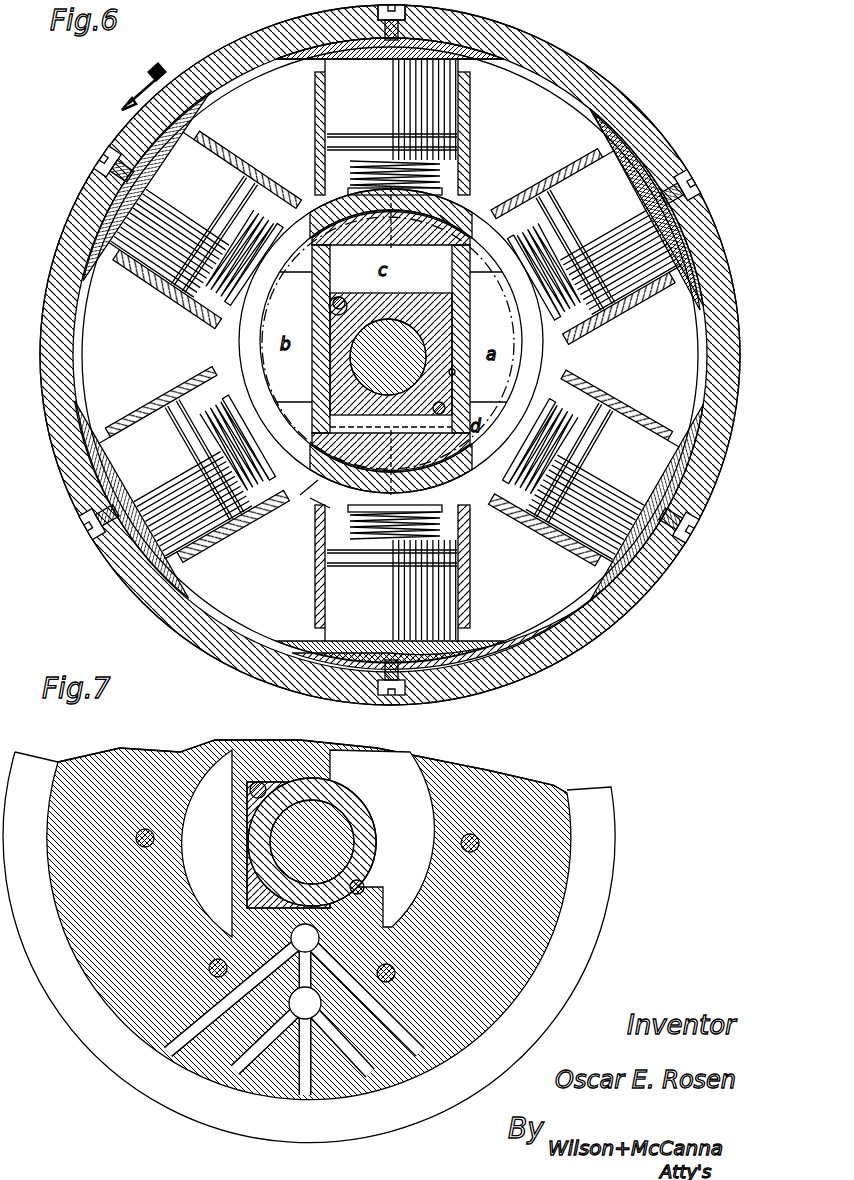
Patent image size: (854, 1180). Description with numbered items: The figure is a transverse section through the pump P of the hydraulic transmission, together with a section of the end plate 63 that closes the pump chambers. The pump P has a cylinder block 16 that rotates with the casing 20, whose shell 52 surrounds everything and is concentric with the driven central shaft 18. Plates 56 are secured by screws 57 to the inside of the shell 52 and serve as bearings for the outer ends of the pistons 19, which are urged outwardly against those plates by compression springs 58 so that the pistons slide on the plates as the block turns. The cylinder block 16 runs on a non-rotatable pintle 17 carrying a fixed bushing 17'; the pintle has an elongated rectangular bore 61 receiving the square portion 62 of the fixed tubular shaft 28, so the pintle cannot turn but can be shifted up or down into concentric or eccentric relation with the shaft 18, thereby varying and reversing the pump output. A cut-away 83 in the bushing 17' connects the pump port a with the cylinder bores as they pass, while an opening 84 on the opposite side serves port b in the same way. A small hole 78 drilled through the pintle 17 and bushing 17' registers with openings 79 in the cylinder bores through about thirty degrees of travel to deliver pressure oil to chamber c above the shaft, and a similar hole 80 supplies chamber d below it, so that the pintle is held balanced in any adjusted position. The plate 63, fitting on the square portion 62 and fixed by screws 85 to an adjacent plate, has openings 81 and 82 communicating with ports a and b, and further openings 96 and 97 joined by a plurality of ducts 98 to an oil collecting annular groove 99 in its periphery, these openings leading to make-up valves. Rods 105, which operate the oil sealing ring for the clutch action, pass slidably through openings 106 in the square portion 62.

In FIG. 6, the cylinder block 16 is at (470, 553).
In FIG. 6, the pintle 17 is at (611, 227).
In FIG. 6, the bushing 17' is at (295, 498).
In FIG. 6, the central shaft 18 is at (410, 360).
In FIG. 7, the central shaft 18 is at (350, 832).
In FIG. 6, the pistons 19 is at (390, 100).
In FIG. 6, the casing 20 is at (664, 138).
In FIG. 6, the tubular shaft 28 is at (405, 300).
In FIG. 7, the tubular shaft 28 is at (345, 800).
In FIG. 6, the shell 52 is at (712, 452).
In FIG. 6, the plates 56 is at (470, 62).
In FIG. 6, the screws 57 is at (388, 38).
In FIG. 6, the compression springs 58 is at (270, 450).
In FIG. 6, the bore 61 is at (470, 290).
In FIG. 6, the square portion 62 is at (455, 372).
In FIG. 7, the square portion 62 is at (250, 892).
In FIG. 6, the plate 63 is at (560, 628).
In FIG. 7, the plate 63 is at (525, 912).
In FIG. 6, the hole 78 is at (392, 247).
In FIG. 6, the openings 79 is at (458, 234).
In FIG. 6, the hole 80 is at (322, 432).
In FIG. 7, the opening 81 is at (420, 782).
In FIG. 7, the opening 82 is at (185, 772).
In FIG. 6, the cutaway 83 is at (560, 358).
In FIG. 6, the opening 84 is at (302, 208).
In FIG. 7, the screws 85 is at (155, 838).
In FIG. 7, the opening 96 is at (305, 938).
In FIG. 7, the opening 97 is at (305, 1003).
In FIG. 7, the ducts 98 is at (380, 1082).
In FIG. 7, the annular groove 99 is at (565, 965).
In FIG. 6, the rods 105 is at (350, 287).
In FIG. 7, the rods 105 is at (250, 792).
In FIG. 6, the openings 106 is at (330, 306).
In FIG. 6, the pump P is at (636, 300).